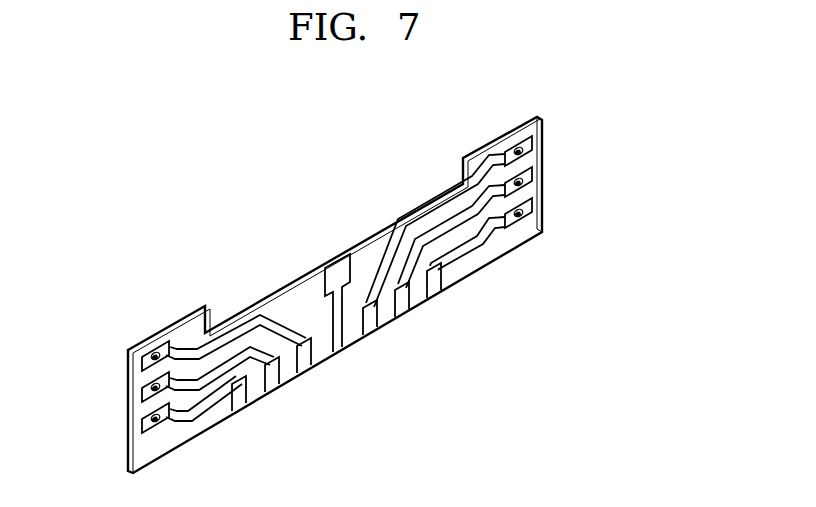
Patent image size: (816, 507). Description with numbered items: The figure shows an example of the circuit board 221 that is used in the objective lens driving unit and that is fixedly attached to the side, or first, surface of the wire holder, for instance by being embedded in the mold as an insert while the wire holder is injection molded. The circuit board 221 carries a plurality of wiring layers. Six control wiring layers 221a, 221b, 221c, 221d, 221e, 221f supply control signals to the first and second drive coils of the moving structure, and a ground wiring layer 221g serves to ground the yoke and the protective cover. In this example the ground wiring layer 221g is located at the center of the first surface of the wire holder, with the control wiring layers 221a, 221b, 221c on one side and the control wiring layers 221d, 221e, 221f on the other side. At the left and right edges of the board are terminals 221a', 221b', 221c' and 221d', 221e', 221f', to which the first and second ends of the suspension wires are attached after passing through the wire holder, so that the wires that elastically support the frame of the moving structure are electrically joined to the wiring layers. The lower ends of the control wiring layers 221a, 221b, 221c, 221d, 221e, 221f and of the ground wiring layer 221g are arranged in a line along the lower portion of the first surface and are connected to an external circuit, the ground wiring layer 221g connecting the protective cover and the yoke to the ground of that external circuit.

The circuit board 221 is at (322, 258).
The control wiring layer 221a is at (214, 428).
The control wiring layer 221b is at (246, 399).
The control wiring layer 221c is at (271, 368).
The control wiring layer 221d is at (434, 258).
The control wiring layer 221e is at (462, 258).
The control wiring layer 221f is at (493, 257).
The ground wiring layer 221g is at (344, 343).
The terminal 221a' is at (114, 443).
The terminal 221b' is at (107, 407).
The terminal 221c' is at (106, 370).
The terminal 221d' is at (573, 148).
The terminal 221e' is at (573, 179).
The terminal 221f' is at (573, 211).